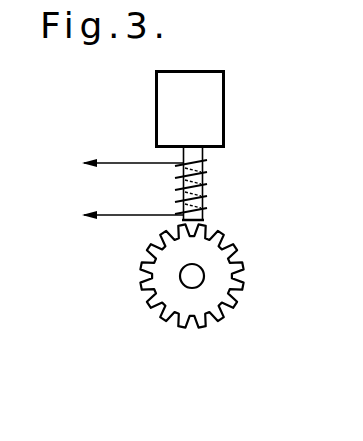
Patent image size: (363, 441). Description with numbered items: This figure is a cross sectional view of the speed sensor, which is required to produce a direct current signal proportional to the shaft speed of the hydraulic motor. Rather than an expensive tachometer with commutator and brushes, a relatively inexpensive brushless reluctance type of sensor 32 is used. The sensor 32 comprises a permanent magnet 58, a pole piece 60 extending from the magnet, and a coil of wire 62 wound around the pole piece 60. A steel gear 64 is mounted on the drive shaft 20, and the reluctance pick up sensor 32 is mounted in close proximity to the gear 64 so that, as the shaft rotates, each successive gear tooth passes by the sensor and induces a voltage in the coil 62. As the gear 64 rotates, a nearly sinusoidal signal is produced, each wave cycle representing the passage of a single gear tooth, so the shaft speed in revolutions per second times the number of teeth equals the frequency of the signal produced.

The drive shaft 20 is at (180, 275).
The sensor 32 is at (140, 146).
The permanent magnet 58 is at (210, 104).
The pole piece 60 is at (205, 212).
The coil of wire 62 is at (205, 188).
The steel gear 64 is at (238, 251).